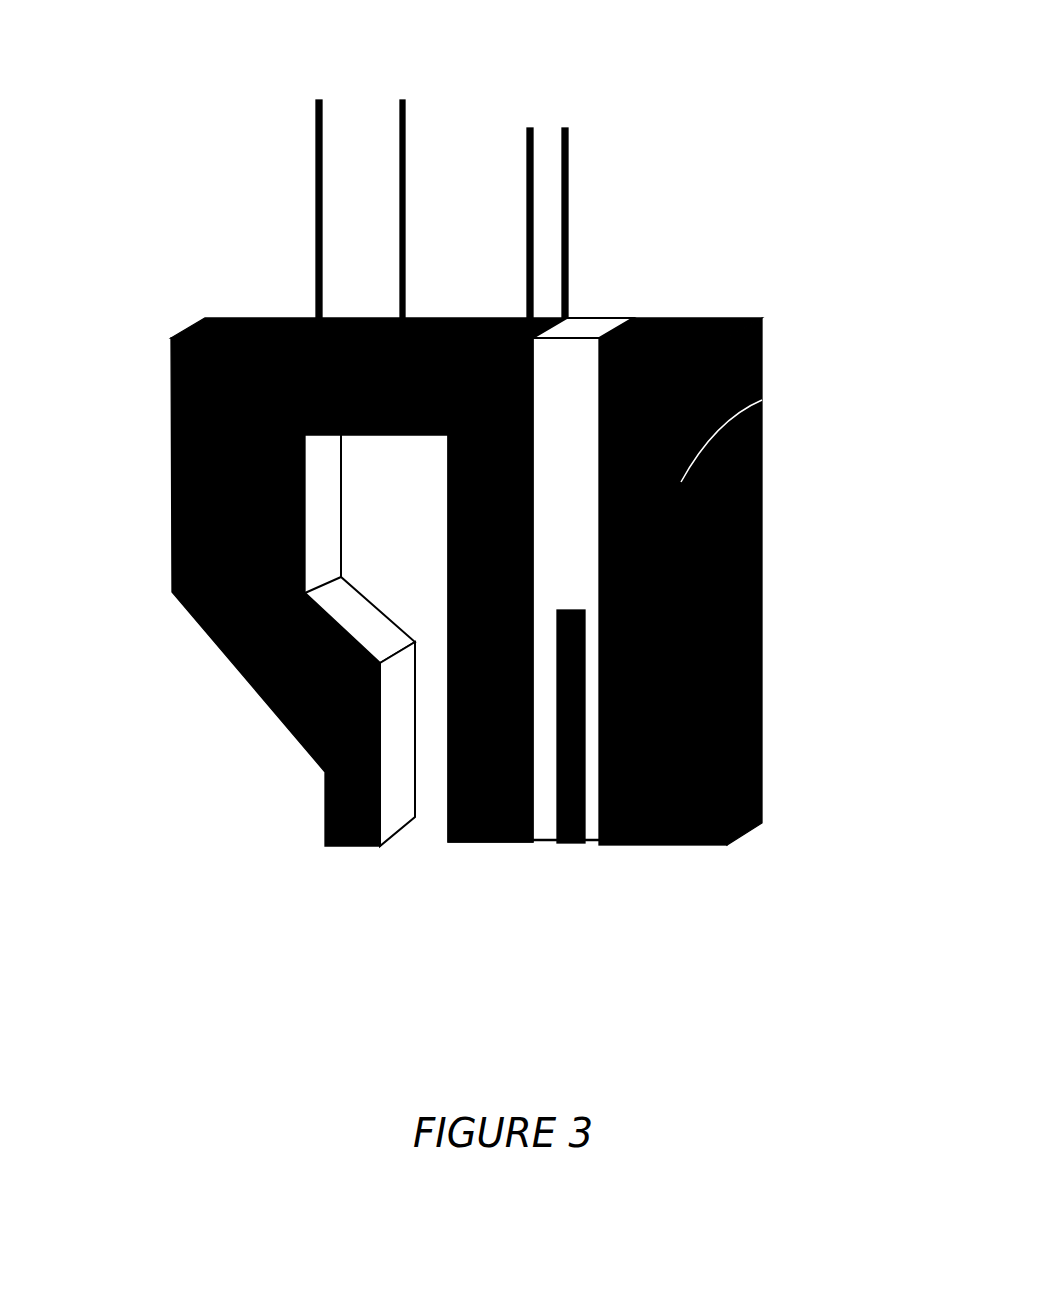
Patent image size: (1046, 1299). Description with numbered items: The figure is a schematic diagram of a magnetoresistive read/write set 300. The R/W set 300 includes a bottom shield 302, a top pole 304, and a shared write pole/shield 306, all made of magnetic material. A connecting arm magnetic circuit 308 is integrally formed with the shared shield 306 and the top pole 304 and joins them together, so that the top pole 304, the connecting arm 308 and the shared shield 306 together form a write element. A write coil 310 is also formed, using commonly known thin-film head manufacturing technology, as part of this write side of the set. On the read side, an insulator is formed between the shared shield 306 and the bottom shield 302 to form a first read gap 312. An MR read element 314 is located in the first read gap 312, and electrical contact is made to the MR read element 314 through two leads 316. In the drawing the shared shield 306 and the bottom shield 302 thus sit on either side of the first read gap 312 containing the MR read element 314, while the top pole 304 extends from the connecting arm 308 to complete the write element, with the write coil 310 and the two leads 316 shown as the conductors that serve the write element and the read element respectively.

The magnetoresistive read/write set 300 is at (802, 34).
The bottom shield 302 is at (762, 400).
The top pole 304 is at (232, 661).
The shared write pole/shield 306 is at (492, 843).
The connecting arm magnetic circuit 308 is at (220, 318).
The write coil 310 is at (353, 318).
The first read gap 312 is at (583, 325).
The MR read element 314 is at (578, 843).
The leads 316 is at (577, 123).